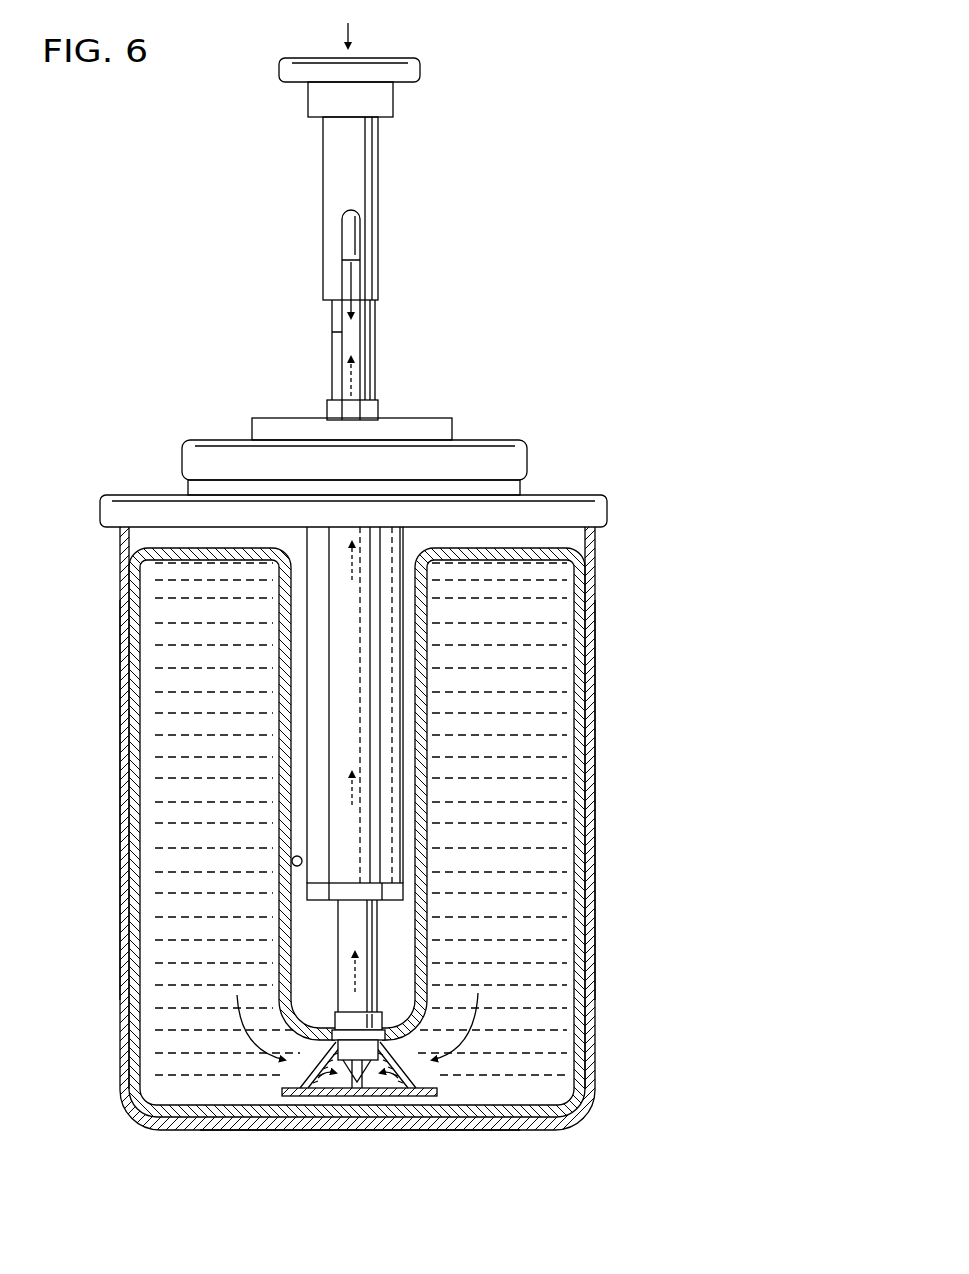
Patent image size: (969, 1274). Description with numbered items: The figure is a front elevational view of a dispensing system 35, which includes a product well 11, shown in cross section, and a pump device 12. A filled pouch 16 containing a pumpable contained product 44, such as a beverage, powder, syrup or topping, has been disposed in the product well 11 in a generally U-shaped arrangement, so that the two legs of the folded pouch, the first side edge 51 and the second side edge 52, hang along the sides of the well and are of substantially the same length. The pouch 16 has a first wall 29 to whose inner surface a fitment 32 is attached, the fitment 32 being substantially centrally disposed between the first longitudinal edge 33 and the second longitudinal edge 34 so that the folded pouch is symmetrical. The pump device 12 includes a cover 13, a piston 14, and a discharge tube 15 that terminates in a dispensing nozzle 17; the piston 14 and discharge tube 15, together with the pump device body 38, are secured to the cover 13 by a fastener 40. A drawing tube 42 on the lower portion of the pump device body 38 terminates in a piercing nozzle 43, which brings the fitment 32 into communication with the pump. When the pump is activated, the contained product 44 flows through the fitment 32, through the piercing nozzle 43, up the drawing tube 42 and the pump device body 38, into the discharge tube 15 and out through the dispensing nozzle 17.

The product well 11 is at (595, 710).
The pump device 12 is at (430, 250).
The cover 13 is at (490, 440).
The piston 14 is at (323, 162).
The discharge tube 15 is at (332, 332).
The pouch 16 is at (586, 893).
The dispensing nozzle 17 is at (340, 240).
The first wall 29 is at (292, 861).
The fitment 32 is at (378, 1094).
The first longitudinal edge 33 is at (180, 548).
The second longitudinal edge 34 is at (525, 548).
The system 35 is at (547, 195).
The pump device body 38 is at (307, 665).
The fastener 40 is at (327, 410).
The drawing tube 42 is at (338, 972).
The piercing nozzle 43 is at (398, 1005).
The contained product 44 is at (478, 837).
The first side edge 51 is at (120, 800).
The second side edge 52 is at (586, 780).